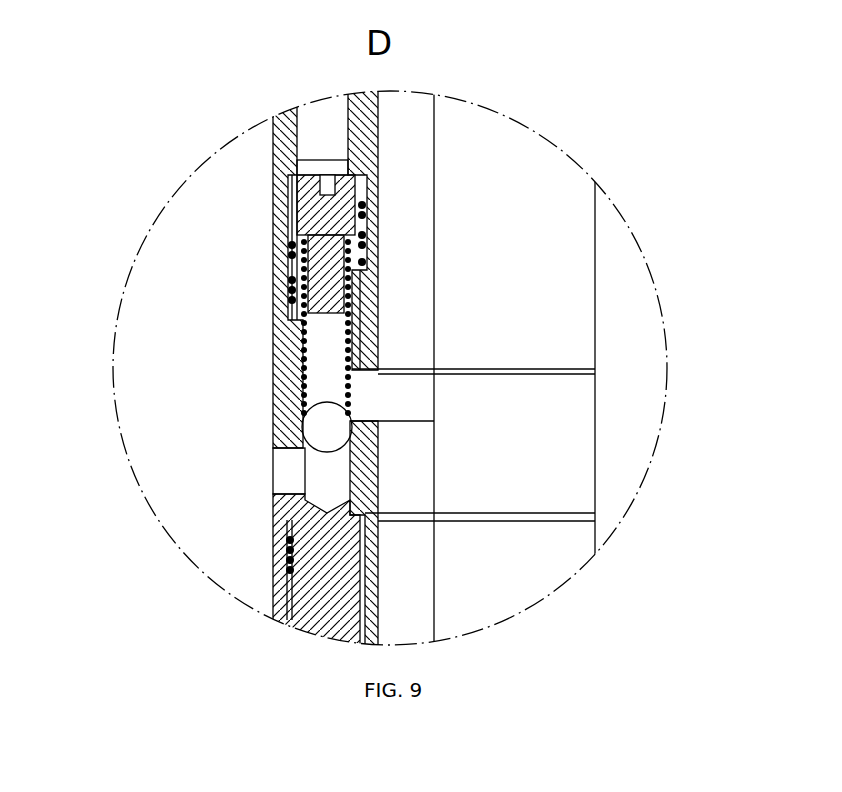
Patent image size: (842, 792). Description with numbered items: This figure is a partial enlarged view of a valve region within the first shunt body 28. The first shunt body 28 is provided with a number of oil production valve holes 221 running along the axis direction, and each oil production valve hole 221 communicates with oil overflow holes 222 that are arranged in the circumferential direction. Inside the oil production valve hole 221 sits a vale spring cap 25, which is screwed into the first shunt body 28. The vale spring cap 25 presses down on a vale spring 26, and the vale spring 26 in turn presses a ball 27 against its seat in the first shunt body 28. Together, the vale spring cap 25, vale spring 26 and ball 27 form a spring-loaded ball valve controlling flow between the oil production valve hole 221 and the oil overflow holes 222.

The vale spring cap 25 is at (323, 240).
The vale spring 26 is at (289, 362).
The ball 27 is at (327, 427).
The first shunt body 28 is at (325, 608).
The oil production valve hole 221 is at (358, 376).
The oil overflow hole 222 is at (290, 487).